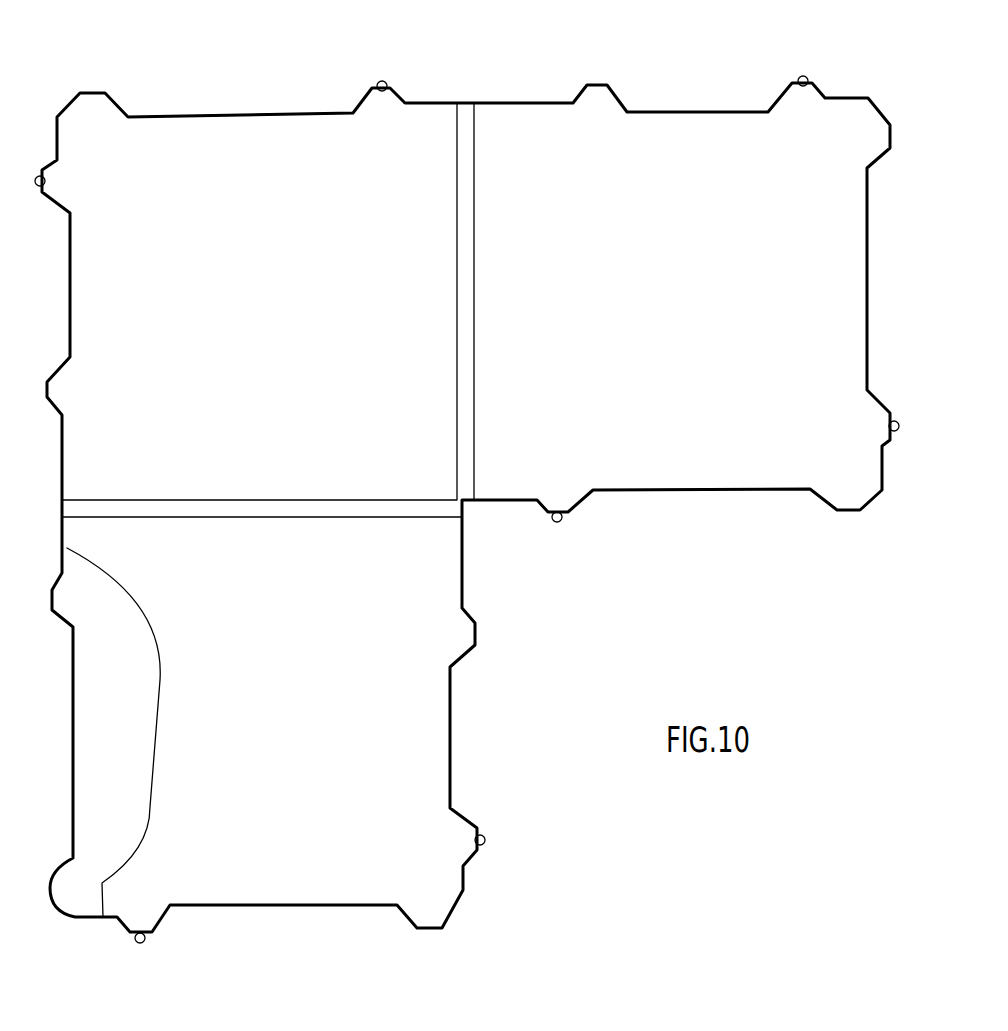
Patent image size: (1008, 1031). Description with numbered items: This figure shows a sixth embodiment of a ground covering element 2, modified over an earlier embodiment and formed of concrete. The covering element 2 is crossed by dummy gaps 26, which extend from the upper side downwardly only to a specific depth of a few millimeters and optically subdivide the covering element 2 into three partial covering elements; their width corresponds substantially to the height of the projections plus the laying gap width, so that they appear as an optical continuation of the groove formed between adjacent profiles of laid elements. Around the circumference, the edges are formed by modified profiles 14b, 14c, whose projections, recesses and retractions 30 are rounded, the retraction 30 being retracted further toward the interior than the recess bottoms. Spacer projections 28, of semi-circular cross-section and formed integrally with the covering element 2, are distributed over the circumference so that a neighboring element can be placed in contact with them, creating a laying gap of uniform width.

The covering element 2 is at (517, 90).
The second profile 14b is at (162, 122).
The third profile 14c is at (74, 300).
The dummy gaps 26 is at (474, 325).
The spacer projections 28 is at (40, 175).
The retraction 30 is at (70, 252).